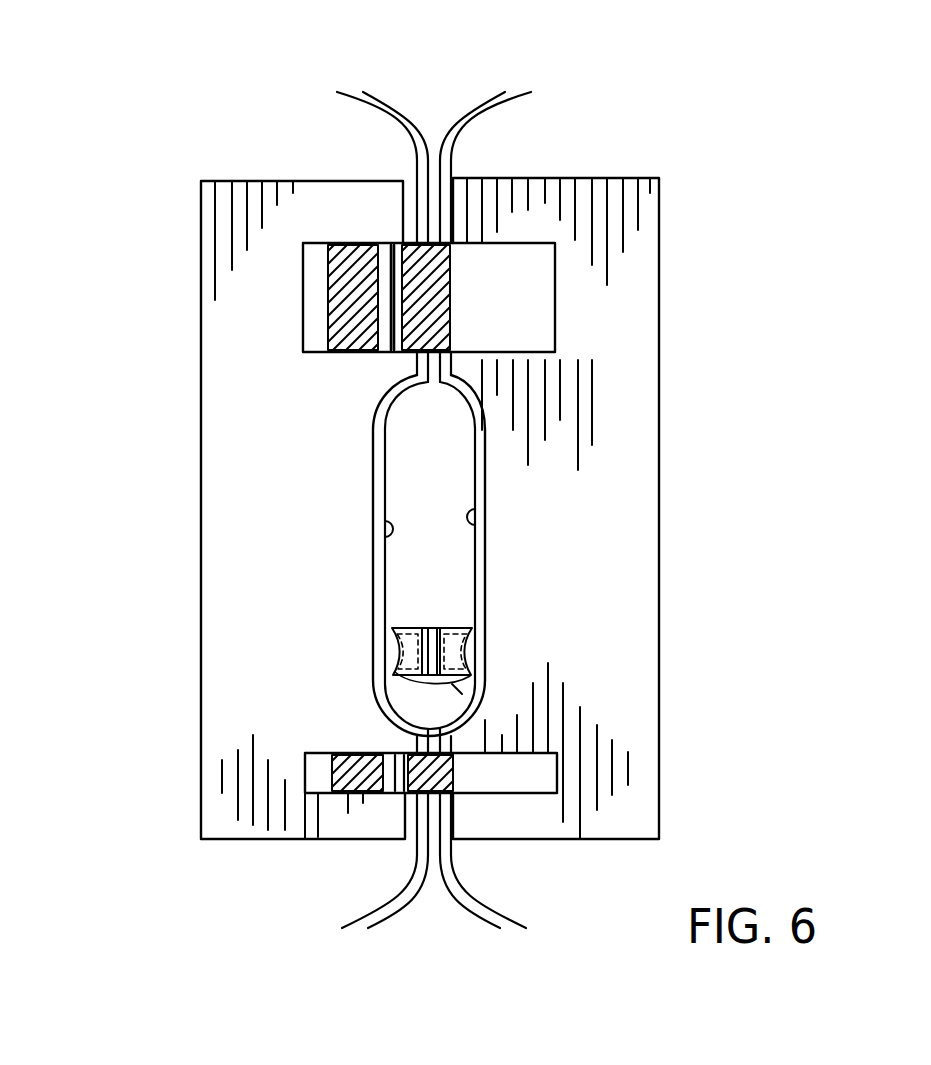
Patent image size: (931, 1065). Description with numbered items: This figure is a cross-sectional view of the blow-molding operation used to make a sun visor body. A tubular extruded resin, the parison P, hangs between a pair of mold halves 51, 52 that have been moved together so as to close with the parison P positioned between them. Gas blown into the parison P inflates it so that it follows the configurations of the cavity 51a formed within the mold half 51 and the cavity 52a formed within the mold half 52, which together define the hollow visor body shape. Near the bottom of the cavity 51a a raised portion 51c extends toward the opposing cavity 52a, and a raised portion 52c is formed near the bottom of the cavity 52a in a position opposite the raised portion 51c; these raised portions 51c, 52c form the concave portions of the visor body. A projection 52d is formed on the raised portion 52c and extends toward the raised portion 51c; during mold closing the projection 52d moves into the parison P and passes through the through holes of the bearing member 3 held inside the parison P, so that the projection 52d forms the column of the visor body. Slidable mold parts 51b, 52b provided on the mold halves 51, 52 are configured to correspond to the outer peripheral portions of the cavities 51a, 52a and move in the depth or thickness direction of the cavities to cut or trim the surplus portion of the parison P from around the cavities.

The parison P is at (387, 98).
The mold half 51 is at (233, 252).
The mold half 52 is at (622, 262).
The cavity 51a is at (383, 527).
The cavity 52a is at (478, 512).
The slidable mold part 51b is at (340, 331).
The slidable mold part 52b is at (440, 320).
The raised portion 51c is at (395, 648).
The raised portion 52c is at (438, 651).
The projection 52d is at (433, 628).
The bearing member 3 is at (450, 682).